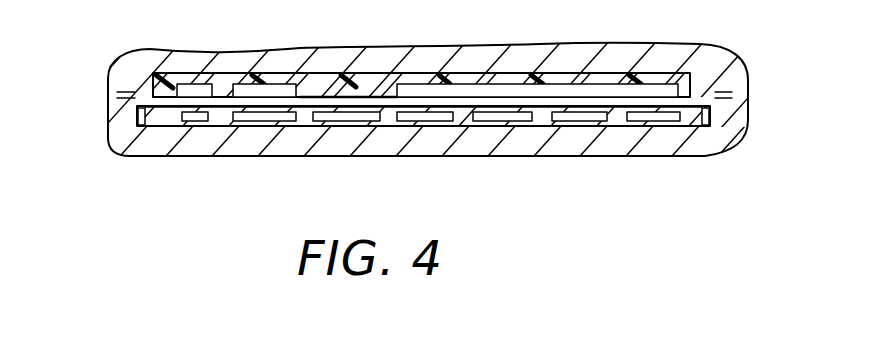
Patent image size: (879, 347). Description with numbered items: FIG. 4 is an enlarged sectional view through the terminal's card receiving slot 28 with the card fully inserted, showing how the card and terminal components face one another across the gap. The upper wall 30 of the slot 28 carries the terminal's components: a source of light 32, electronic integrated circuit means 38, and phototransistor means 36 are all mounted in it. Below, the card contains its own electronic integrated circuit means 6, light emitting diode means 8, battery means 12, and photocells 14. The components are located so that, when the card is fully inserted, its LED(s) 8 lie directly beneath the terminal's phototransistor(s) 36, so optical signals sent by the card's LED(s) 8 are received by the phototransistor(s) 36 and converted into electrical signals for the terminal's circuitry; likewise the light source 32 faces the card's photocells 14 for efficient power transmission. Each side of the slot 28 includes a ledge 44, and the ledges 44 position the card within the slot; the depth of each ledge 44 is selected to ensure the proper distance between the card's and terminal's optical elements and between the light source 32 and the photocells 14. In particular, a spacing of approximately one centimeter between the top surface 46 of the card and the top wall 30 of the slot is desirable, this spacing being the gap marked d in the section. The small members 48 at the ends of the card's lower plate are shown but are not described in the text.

The electronic integrated circuit means 6 is at (278, 121).
The light emitting diode means 8 is at (197, 121).
The battery means 12 is at (340, 121).
The photocells 14 is at (493, 121).
The card receiving slot 28 is at (328, 100).
The upper wall 30 is at (385, 97).
The source of light 32 is at (615, 86).
The phototransistor means 36 is at (190, 85).
The electronic integrated circuit means 38 is at (286, 85).
The ledge 44 is at (143, 97).
The top surface 46 is at (392, 107).
The spacer 48 is at (150, 126).
The gap distance d is at (120, 97).